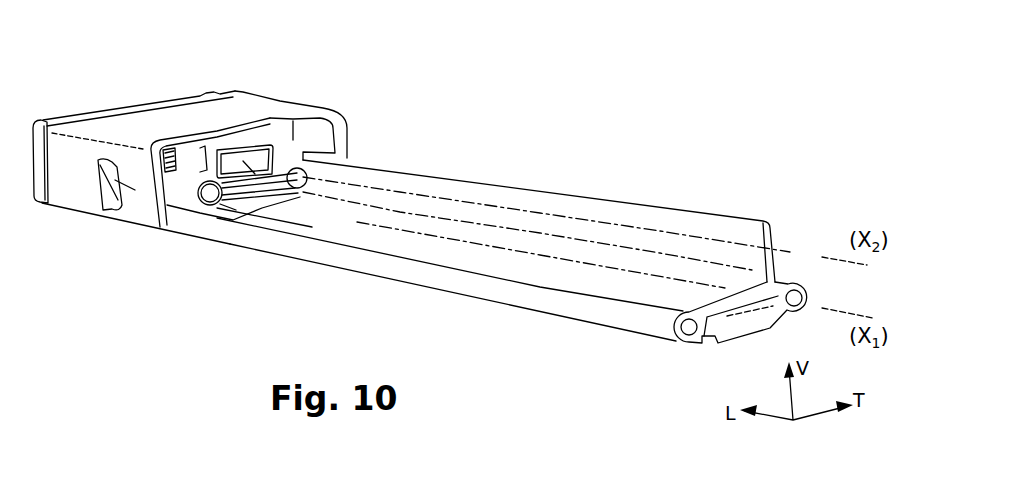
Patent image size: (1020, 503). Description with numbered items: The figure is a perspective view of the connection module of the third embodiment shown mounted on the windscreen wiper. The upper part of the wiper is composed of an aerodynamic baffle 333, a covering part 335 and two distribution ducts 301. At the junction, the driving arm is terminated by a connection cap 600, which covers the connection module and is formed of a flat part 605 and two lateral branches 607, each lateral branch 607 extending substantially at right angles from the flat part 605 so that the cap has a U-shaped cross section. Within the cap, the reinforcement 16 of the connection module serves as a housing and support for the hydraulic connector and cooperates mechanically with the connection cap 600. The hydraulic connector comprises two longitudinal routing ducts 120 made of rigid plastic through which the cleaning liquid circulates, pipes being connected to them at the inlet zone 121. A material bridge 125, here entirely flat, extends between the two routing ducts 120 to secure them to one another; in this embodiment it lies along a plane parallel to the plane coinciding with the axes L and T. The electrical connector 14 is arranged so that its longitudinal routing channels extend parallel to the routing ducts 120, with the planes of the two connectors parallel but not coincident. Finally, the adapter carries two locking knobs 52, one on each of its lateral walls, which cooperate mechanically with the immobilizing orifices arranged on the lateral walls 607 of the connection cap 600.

The flat part 605 is at (122, 118).
The connection cap 600 is at (240, 110).
The reinforcement 16 is at (278, 132).
The routing duct 120 is at (200, 156).
The aerodynamic baffle 333 is at (568, 196).
The covering part 335 is at (503, 263).
The distribution duct 301 is at (806, 290).
The lateral branch 607 is at (72, 177).
The locking knob 52 is at (115, 185).
The inlet zone 121 is at (228, 203).
The material bridge 125 is at (265, 207).
The electrical connector 14 is at (267, 208).